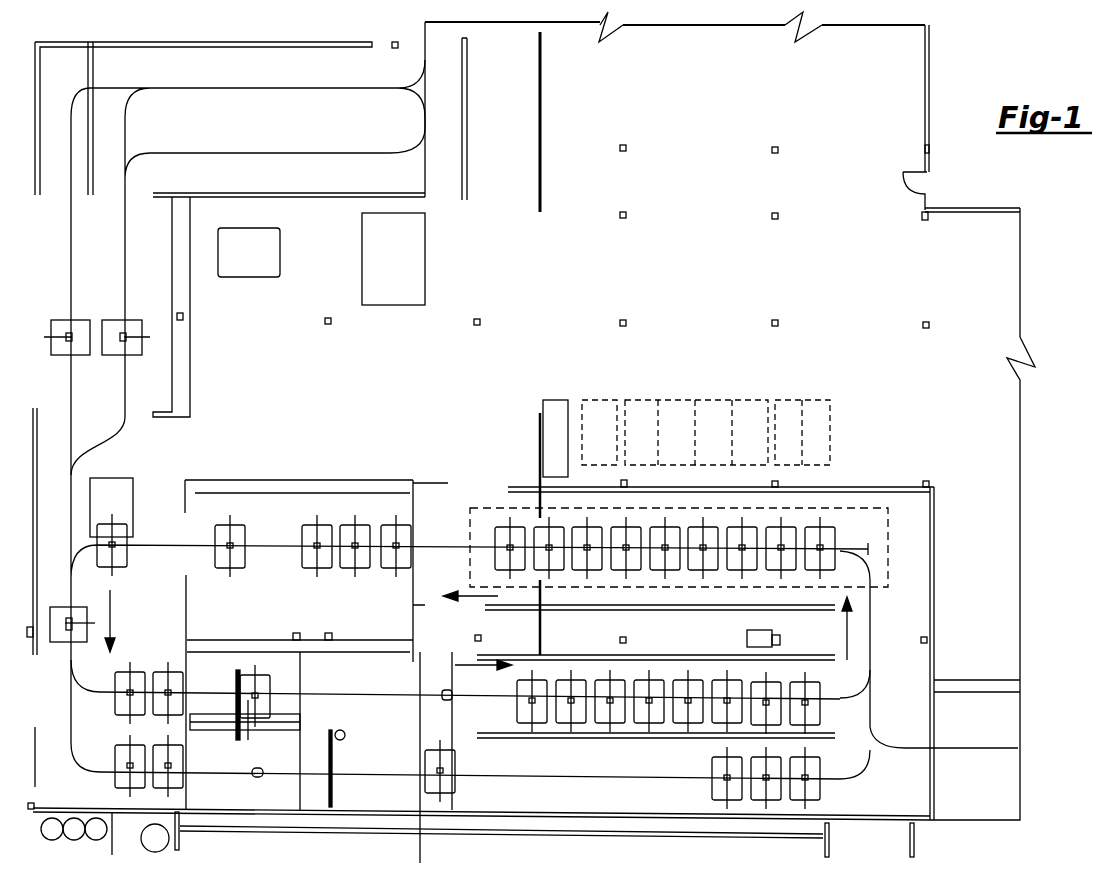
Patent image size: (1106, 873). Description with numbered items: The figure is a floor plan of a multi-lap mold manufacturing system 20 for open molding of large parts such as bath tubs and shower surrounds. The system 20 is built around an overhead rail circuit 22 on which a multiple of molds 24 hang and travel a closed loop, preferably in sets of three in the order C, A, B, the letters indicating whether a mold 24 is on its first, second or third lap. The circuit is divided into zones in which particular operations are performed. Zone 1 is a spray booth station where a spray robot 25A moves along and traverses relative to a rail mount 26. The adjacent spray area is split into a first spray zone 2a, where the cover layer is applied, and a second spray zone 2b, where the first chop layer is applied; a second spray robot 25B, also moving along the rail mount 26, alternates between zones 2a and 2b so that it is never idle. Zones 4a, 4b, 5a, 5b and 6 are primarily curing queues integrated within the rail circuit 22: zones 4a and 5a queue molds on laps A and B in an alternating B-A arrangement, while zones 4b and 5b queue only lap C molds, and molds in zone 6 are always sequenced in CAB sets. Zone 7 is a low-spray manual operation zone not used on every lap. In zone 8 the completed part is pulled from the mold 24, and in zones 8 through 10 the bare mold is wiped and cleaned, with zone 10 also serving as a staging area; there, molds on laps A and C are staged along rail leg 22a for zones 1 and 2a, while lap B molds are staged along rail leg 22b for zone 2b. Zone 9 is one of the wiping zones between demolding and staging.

The multi-lap mold manufacturing system 20 is at (436, 421).
The overhead rail circuit 22 is at (448, 540).
The rail leg 22a is at (73, 685).
The rail leg 22b is at (71, 765).
The mold 24 is at (705, 530).
The spray robot 25A is at (236, 700).
The second spray robot 25B is at (332, 755).
The rail mount 26 is at (297, 752).
The Zone 1 is at (283, 668).
The first spray Zone 2a is at (392, 673).
The second spray Zone 2b is at (392, 753).
The Zone 4a is at (480, 682).
The Zone 4b is at (495, 755).
The Zone 5a is at (837, 680).
The Zone 5b is at (837, 760).
The Zone 6 is at (820, 508).
The Zone 7 is at (272, 520).
The Zone 8 is at (148, 513).
The Zone 9 is at (52, 583).
The Zone 10 is at (132, 730).